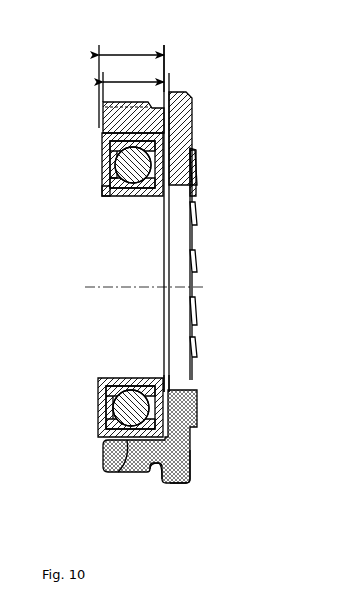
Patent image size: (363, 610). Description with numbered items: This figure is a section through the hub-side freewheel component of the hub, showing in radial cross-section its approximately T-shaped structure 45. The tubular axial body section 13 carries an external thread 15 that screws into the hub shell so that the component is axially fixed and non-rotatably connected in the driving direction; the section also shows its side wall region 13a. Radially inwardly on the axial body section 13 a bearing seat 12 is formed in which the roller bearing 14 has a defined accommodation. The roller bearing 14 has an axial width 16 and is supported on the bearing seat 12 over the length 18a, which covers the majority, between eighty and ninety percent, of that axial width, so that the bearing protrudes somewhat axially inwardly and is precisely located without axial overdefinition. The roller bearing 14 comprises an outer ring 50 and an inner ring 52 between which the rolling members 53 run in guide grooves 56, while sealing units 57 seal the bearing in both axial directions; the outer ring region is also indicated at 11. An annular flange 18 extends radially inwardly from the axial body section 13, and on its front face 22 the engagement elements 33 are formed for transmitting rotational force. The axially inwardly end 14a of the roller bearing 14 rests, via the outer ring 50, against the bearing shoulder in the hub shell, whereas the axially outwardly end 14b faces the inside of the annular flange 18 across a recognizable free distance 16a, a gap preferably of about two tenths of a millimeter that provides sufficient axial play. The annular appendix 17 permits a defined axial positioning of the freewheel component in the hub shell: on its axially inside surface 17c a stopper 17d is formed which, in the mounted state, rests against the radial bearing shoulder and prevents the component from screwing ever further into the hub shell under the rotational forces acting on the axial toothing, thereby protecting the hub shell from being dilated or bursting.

The outer ring of second bearing 11 is at (99, 410).
The bearing seat 12 is at (104, 101).
The axial body section 13 is at (150, 458).
The side wall of lower body 13a is at (103, 461).
The roller bearing 14 is at (92, 190).
The axially inwardly end 14a is at (95, 400).
The axially outwardly end 14b is at (170, 383).
The external thread 15 is at (104, 294).
The axial width 16 is at (131, 83).
The free distance 16a is at (169, 215).
The annular appendix 17 is at (187, 97).
The axially inside surface 17c is at (156, 484).
The stopper 17d is at (166, 76).
The annular flange 18 is at (215, 280).
The length 18a is at (133, 84).
The front face 22 is at (223, 243).
The engagement elements 33 is at (198, 310).
The T-shaped structure 45 is at (203, 481).
The outer ring 50 is at (103, 138).
The inner ring 52 is at (101, 192).
The rolling members 53 is at (133, 183).
The guide grooves 56 is at (104, 114).
The sealing units 57 is at (106, 172).